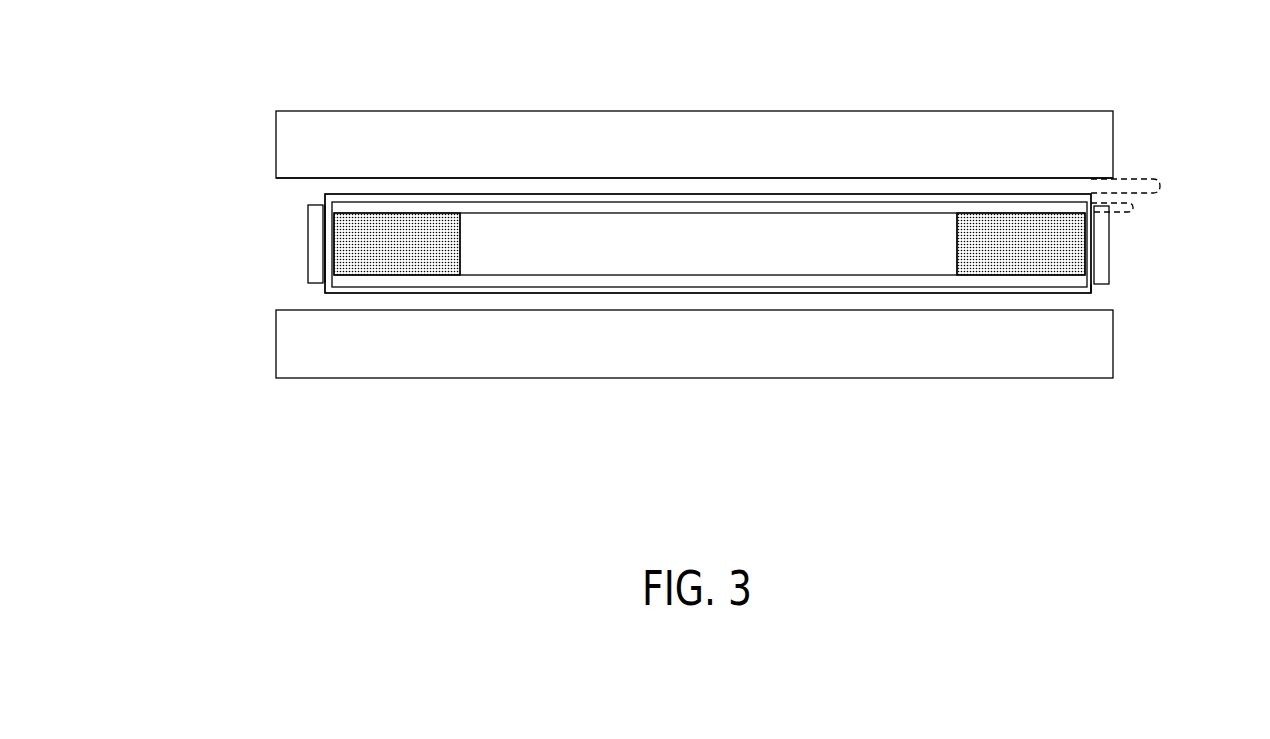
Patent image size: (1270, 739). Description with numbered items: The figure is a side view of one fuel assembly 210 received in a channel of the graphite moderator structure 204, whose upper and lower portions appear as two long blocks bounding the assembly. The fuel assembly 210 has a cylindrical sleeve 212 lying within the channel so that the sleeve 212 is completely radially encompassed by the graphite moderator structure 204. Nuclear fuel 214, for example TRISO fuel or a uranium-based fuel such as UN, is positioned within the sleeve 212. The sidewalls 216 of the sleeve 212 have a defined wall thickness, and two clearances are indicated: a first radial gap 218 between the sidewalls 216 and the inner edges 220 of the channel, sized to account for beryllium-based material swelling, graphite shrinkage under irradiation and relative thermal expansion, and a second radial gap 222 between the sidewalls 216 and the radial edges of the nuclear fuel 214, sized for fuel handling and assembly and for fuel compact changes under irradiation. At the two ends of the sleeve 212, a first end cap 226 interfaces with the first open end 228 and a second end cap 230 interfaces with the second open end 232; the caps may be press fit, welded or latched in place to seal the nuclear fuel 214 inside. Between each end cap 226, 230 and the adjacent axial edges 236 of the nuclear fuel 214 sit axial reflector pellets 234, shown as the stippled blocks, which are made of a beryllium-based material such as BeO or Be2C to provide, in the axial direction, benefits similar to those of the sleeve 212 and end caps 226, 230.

The graphite moderator structure 204 is at (474, 157).
The fuel assembly 210 is at (263, 227).
The cylindrical sleeve 212 is at (856, 192).
The nuclear fuel 214 is at (707, 233).
The sidewall 216 is at (245, 183).
The first radial gap 218 is at (1162, 188).
The inner edge 220 is at (983, 178).
The second radial gap 222 is at (1137, 207).
The first end cap 226 is at (314, 245).
The first open end 228 is at (313, 287).
The second end cap 230 is at (1112, 255).
The second open end 232 is at (1098, 292).
The axial reflector pellet 234 is at (370, 228).
The axial edge 236 is at (458, 255).